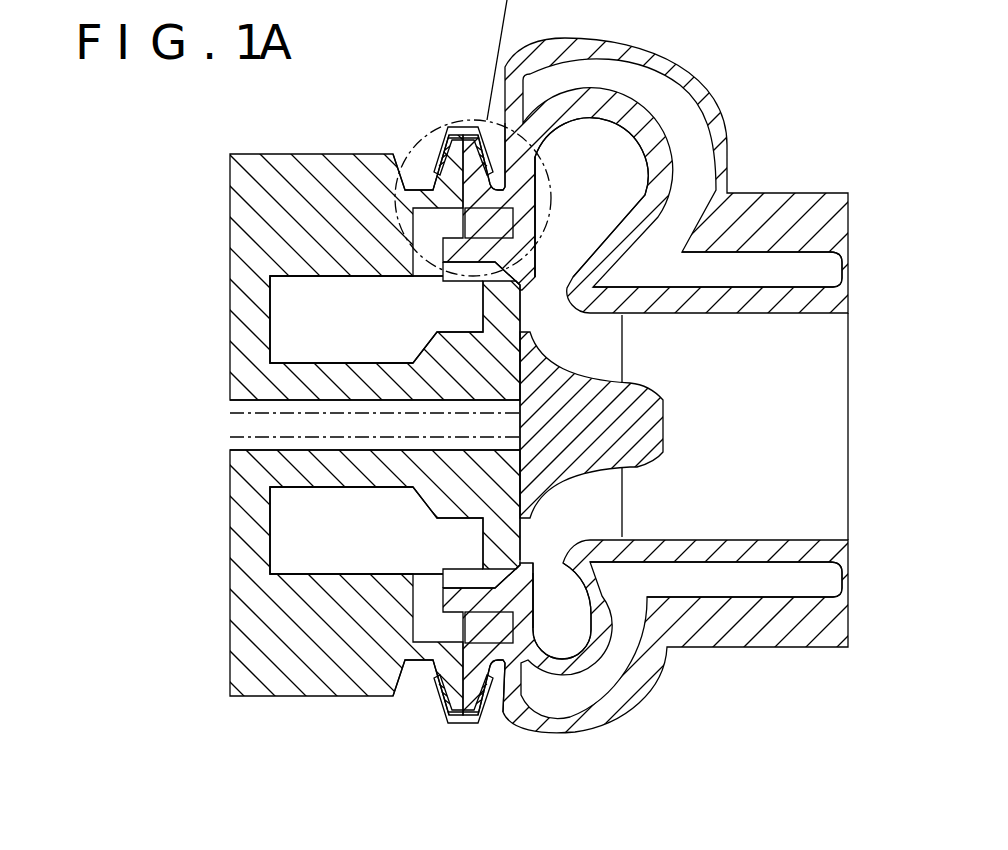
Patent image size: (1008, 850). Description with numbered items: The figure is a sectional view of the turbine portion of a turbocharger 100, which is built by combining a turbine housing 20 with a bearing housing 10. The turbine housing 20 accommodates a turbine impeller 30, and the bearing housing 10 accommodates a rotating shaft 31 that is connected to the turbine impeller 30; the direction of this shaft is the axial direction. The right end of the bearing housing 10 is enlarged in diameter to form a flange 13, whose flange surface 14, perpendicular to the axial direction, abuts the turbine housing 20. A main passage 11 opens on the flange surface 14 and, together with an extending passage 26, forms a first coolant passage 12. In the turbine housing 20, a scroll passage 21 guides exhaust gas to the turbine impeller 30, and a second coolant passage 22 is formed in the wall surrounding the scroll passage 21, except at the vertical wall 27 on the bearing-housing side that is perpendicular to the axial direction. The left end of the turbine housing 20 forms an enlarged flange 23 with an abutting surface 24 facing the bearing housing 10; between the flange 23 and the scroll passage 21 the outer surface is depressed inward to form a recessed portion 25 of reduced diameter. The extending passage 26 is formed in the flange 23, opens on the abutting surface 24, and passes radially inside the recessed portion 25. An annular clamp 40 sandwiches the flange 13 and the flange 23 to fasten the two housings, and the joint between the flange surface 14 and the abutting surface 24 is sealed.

The turbocharger 100 is at (338, 38).
The bearing housing 10 is at (305, 154).
The main passage 11 is at (330, 332).
The first coolant passage 12 is at (398, 332).
The flange 13 is at (436, 150).
The flange surface 14 is at (423, 664).
The turbine housing 20 is at (692, 71).
The scroll passage 21 is at (640, 179).
The second coolant passage 22 is at (666, 283).
The flange 23 is at (498, 150).
The abutting surface 24 is at (440, 698).
The recessed portion 25 is at (520, 200).
The extending passage 26 is at (504, 236).
The vertical wall 27 is at (523, 232).
The turbine impeller 30 is at (665, 430).
The rotating shaft 31 is at (232, 437).
The clamp 40 is at (467, 125).